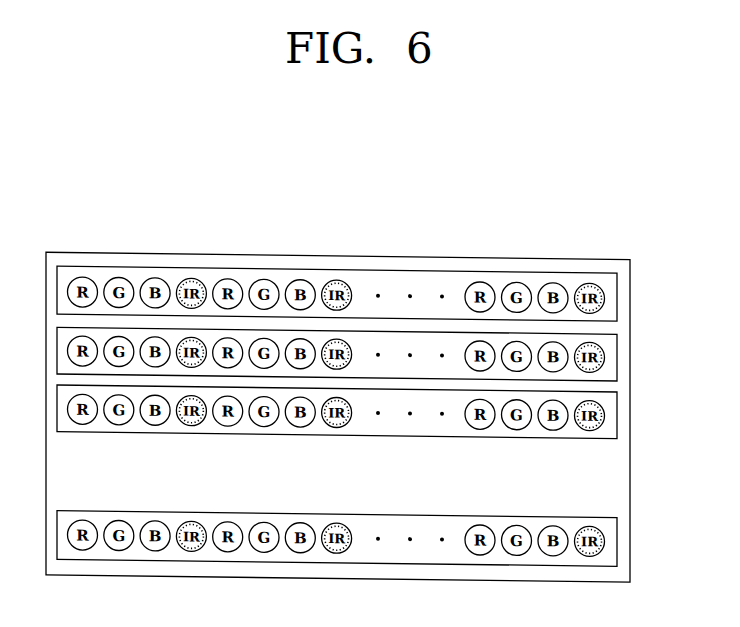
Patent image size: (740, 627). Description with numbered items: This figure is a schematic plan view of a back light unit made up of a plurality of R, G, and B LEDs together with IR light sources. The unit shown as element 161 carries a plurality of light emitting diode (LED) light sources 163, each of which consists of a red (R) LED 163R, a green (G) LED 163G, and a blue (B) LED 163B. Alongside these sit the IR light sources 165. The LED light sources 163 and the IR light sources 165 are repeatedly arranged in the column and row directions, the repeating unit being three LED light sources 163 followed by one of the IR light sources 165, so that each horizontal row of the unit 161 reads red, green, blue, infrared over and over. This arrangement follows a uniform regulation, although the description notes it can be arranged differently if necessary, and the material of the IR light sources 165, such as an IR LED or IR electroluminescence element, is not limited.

The pixel array substrate 161 is at (630, 413).
The light emitting diode (LED) light source 163 is at (197, 203).
The red (R) LED 163R is at (222, 277).
The green (G) LED 163G is at (262, 276).
The blue (B) LED 163B is at (301, 276).
The IR light source 165 is at (340, 276).